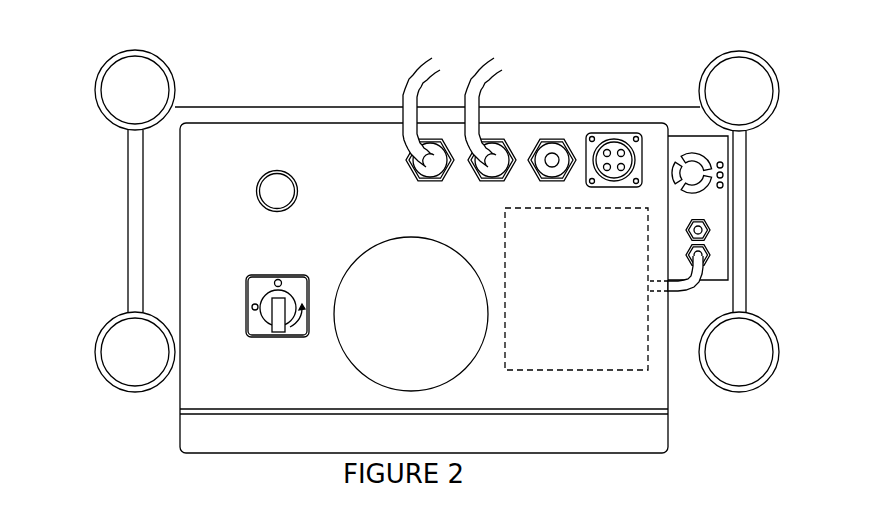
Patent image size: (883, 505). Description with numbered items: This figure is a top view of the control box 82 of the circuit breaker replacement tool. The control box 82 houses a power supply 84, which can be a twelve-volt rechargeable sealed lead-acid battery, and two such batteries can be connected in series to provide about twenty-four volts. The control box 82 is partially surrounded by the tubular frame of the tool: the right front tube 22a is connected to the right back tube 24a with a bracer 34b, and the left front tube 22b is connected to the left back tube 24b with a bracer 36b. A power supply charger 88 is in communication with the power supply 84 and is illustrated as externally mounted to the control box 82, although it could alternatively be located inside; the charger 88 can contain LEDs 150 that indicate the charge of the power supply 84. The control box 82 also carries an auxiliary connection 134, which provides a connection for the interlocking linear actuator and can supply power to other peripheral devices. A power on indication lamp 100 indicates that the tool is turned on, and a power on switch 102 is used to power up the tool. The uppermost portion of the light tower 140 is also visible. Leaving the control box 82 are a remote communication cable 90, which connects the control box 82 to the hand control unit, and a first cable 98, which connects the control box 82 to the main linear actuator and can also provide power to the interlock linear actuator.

The right front tube 22a is at (739, 91).
The left front tube 22b is at (135, 90).
The right back tube 24a is at (739, 352).
The left back tube 24b is at (135, 352).
The bracer 34b is at (135, 228).
The bracer 36b is at (739, 288).
The control box 82 is at (276, 87).
The power supply 84 is at (615, 338).
The power supply charger 88 is at (717, 212).
The remote communication cable 90 is at (422, 80).
The first cable 98 is at (483, 80).
The power on indication lamp 100 is at (277, 191).
The power on switch 102 is at (260, 283).
The auxiliary connection 134 is at (610, 153).
The light tower 140 is at (383, 275).
The LEDs 150 is at (723, 165).